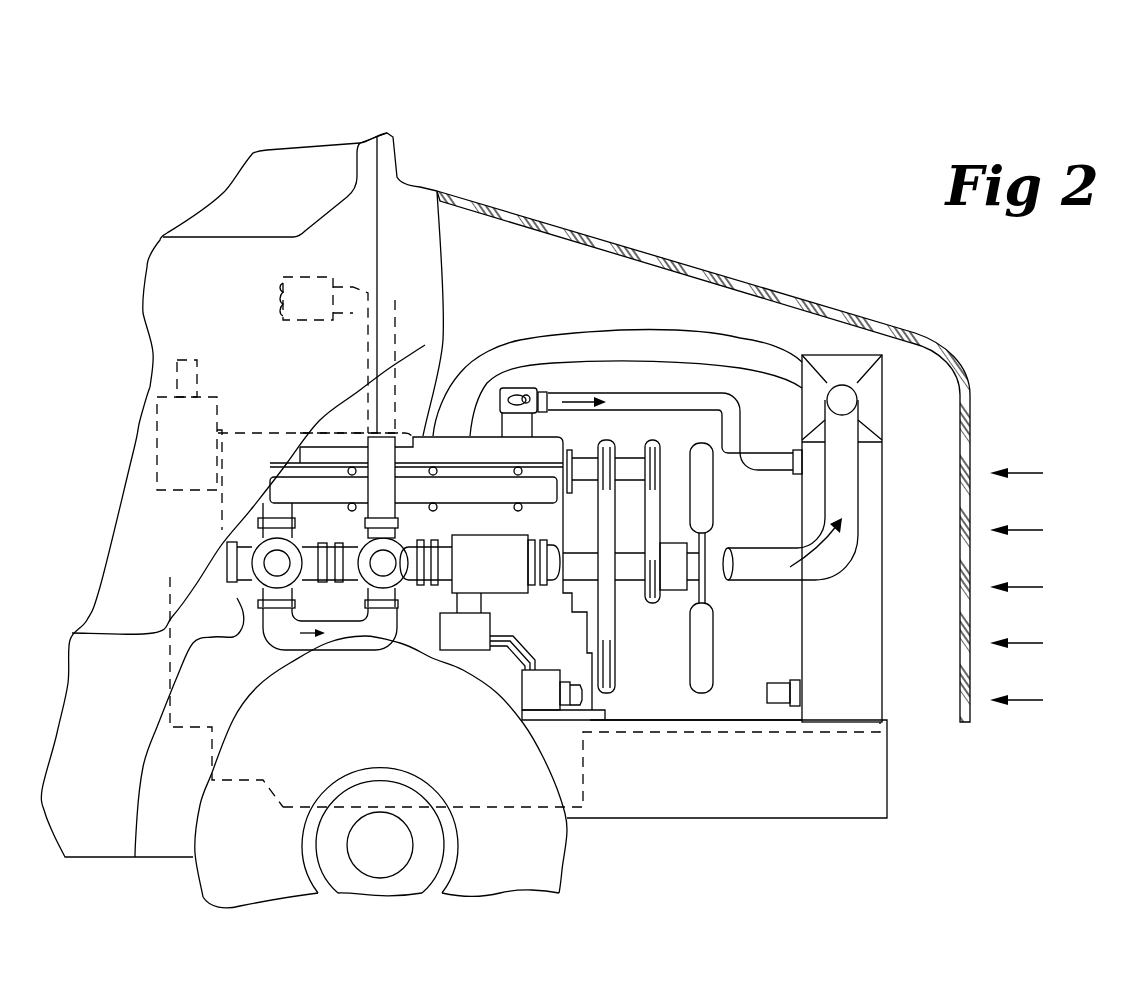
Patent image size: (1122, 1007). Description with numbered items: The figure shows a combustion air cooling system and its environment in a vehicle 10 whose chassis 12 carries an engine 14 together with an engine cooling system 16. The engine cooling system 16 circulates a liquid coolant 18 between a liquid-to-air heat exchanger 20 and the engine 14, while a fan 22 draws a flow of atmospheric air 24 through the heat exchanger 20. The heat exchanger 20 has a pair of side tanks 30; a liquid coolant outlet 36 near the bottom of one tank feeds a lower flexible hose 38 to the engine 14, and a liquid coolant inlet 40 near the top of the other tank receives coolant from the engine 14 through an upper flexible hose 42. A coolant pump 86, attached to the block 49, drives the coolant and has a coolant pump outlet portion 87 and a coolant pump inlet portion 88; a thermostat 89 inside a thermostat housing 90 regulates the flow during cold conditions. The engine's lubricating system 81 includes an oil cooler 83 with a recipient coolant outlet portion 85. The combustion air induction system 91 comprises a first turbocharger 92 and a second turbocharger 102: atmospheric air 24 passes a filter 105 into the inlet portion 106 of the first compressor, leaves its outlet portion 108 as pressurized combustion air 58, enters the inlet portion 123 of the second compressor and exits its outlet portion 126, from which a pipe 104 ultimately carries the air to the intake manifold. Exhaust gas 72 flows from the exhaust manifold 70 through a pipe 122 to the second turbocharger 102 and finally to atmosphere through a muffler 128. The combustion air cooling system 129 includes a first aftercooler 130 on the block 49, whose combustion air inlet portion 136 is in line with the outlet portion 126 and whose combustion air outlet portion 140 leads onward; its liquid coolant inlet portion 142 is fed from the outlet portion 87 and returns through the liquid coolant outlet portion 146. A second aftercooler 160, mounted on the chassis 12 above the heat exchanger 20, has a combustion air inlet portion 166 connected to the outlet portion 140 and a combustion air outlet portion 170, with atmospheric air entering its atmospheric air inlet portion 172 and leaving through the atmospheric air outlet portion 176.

The vehicle 10 is at (510, 208).
The chassis 12 is at (875, 820).
The engine 14 is at (517, 285).
The engine cooling system 16 is at (926, 321).
The liquid coolant 18 is at (573, 393).
The heat exchanger 20 is at (803, 492).
The fan 22 is at (857, 686).
The atmospheric air 24 is at (1043, 473).
The side tanks 30 is at (842, 640).
The liquid coolant outlet 36 is at (777, 705).
The lower flexible hose 38 is at (797, 706).
The liquid coolant inlet 40 is at (883, 465).
The upper flexible hose 42 is at (623, 393).
The block 49 is at (197, 708).
The pressurized combustion air 58 is at (840, 578).
The exhaust manifold 70 is at (482, 467).
The exhaust gas 72 is at (302, 635).
The lubricating system 81 is at (410, 702).
The oil cooler 83 is at (452, 648).
The recipient coolant outlet portion 85 is at (500, 667).
The coolant pump 86 is at (528, 706).
The coolant pump outlet portion 87 is at (522, 670).
The coolant pump inlet portion 88 is at (567, 721).
The thermostat 89 is at (530, 389).
The thermostat housing 90 is at (503, 388).
The combustion air induction system 91 is at (625, 212).
The first turbocharger 92 is at (262, 585).
The second turbocharger 102 is at (440, 648).
The pipe 104 is at (547, 338).
The filter 105 is at (130, 413).
The inlet portion 106 is at (227, 567).
The outlet portion 108 is at (312, 450).
The pipe 122 is at (258, 537).
The inlet portion 123 is at (352, 505).
The outlet portion 126 is at (433, 468).
The muffler 128 is at (307, 273).
The combustion air cooling system 129 is at (680, 245).
The first aftercooler 130 is at (472, 572).
The combustion air inlet portion 136 is at (440, 437).
The combustion air outlet portion 140 is at (545, 593).
The liquid coolant inlet portion 142 is at (575, 620).
The liquid coolant outlet portion 146 is at (578, 686).
The second aftercooler 160 is at (842, 353).
The combustion air inlet portion 166 is at (858, 398).
The combustion air outlet portion 170 is at (802, 355).
The atmospheric air inlet portion 172 is at (883, 413).
The atmospheric air outlet portion 176 is at (800, 380).